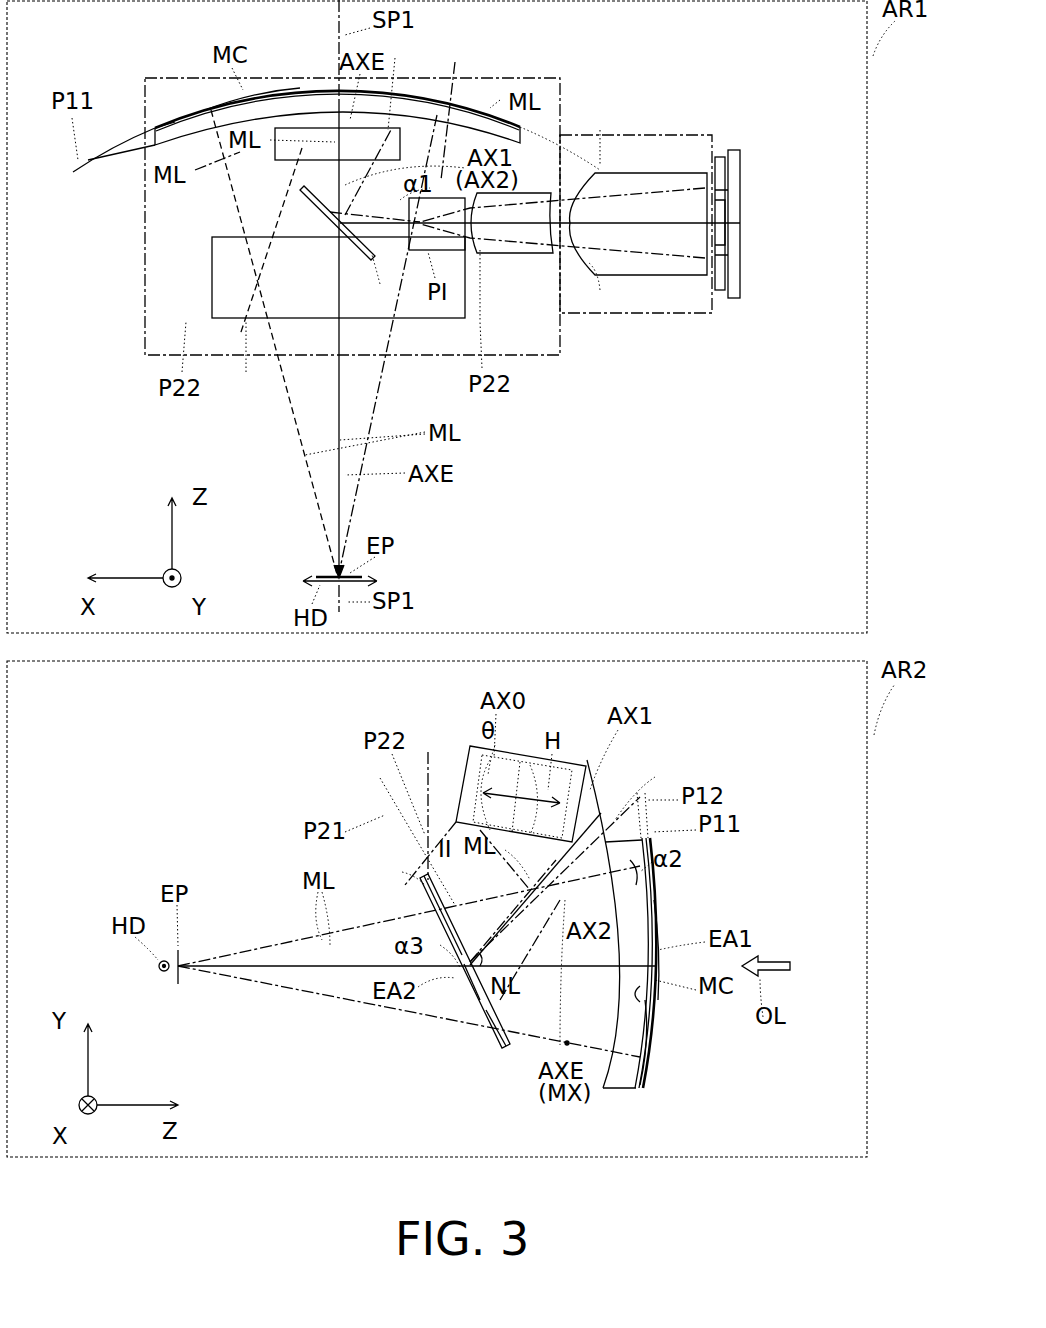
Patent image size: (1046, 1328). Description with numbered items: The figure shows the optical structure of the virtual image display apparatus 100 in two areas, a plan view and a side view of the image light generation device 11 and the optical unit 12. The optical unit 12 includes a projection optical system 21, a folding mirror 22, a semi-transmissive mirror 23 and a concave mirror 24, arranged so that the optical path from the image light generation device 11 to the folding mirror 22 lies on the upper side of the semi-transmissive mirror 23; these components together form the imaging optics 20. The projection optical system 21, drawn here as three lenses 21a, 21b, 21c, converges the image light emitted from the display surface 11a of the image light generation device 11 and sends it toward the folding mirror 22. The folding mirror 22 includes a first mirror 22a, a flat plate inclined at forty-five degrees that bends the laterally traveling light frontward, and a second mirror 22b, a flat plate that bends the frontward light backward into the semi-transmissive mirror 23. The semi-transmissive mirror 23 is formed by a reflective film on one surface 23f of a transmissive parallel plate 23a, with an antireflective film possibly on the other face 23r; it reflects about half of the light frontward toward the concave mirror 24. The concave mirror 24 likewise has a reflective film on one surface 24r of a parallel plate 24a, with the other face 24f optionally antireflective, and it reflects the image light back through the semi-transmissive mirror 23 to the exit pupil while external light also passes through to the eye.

The virtual image display apparatus 100 is at (628, 125).
The image light generation device 11 is at (732, 152).
The display surface 11a is at (720, 292).
The optical unit 12 is at (162, 102).
The imaging optical system 20 is at (532, 358).
The projection optical system 21 is at (566, 268).
The lens 21a is at (648, 290).
The lens 21b is at (510, 250).
The lens 21c is at (452, 262).
The folding mirror 22 is at (273, 177).
The first mirror 22a is at (322, 215).
The second mirror 22b is at (312, 130).
The semi-transmissive mirror 23 is at (432, 322).
The parallel plate 23a is at (488, 1012).
The one surface 23f is at (502, 1040).
The other face 23r is at (450, 1010).
The concave mirror 24 is at (200, 90).
The parallel plate 24a is at (215, 104).
The other face 24f is at (165, 122).
The one surface 24r is at (158, 150).